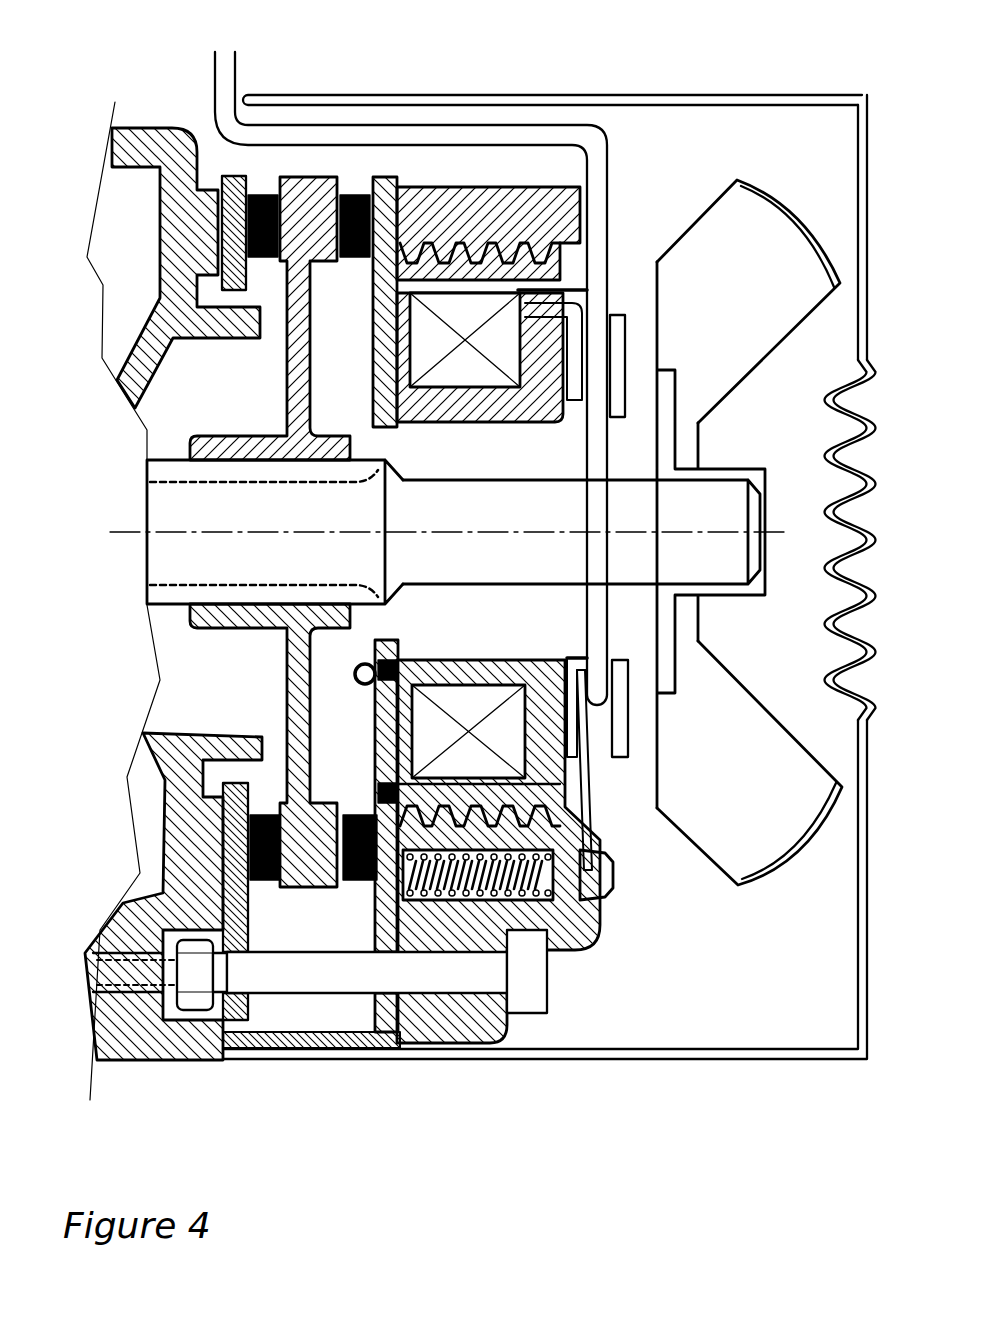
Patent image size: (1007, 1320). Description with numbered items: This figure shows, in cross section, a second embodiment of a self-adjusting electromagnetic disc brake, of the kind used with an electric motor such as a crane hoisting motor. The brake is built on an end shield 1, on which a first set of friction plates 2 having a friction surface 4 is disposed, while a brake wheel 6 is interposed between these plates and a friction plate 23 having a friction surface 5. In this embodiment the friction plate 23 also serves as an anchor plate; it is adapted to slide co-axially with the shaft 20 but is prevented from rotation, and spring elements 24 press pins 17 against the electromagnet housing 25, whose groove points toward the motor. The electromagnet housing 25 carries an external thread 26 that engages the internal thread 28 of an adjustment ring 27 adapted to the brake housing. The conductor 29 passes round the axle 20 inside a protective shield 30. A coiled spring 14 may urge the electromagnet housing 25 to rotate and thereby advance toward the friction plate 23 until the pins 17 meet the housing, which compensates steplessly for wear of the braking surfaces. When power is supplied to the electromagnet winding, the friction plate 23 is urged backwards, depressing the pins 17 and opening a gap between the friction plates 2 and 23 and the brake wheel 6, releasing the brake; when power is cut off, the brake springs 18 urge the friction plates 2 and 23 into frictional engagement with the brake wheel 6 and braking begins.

The end shield 1 is at (152, 713).
The friction plates 2 is at (247, 1060).
The friction surface 4 is at (277, 893).
The friction surface 5 is at (357, 890).
The brake wheel 6 is at (298, 607).
The coiled spring 14 is at (593, 790).
The pins 17 is at (378, 700).
The brake springs 18 is at (560, 897).
The shaft 20 is at (720, 523).
The friction plate 23 is at (383, 1048).
The spring elements 24 is at (298, 648).
The electromagnet housing 25 is at (527, 428).
The external thread 26 is at (537, 240).
The adjustment ring 27 is at (455, 197).
The internal thread 28 is at (487, 230).
The conductor 29 is at (348, 137).
The protective shield 30 is at (627, 328).